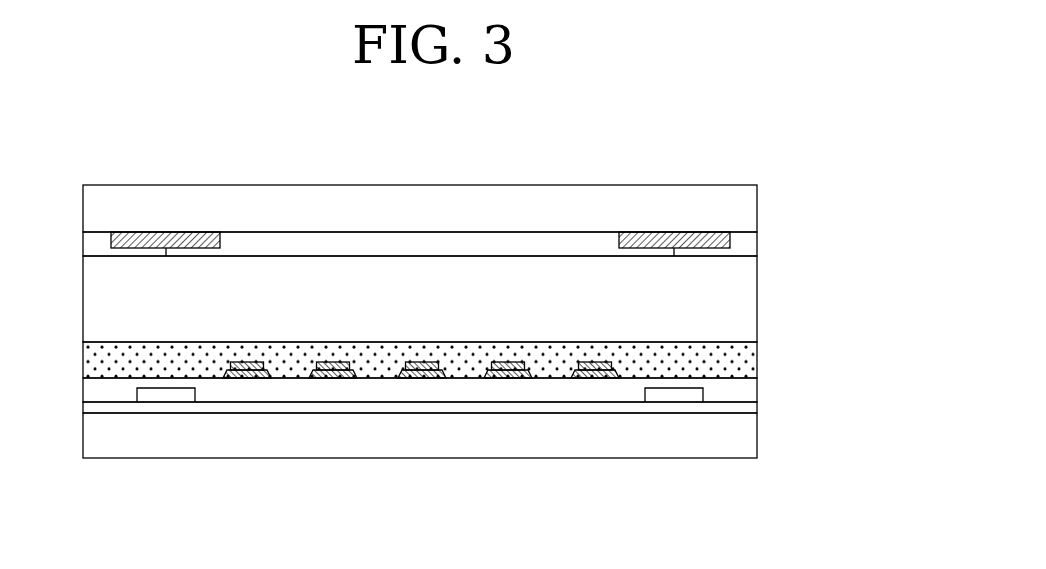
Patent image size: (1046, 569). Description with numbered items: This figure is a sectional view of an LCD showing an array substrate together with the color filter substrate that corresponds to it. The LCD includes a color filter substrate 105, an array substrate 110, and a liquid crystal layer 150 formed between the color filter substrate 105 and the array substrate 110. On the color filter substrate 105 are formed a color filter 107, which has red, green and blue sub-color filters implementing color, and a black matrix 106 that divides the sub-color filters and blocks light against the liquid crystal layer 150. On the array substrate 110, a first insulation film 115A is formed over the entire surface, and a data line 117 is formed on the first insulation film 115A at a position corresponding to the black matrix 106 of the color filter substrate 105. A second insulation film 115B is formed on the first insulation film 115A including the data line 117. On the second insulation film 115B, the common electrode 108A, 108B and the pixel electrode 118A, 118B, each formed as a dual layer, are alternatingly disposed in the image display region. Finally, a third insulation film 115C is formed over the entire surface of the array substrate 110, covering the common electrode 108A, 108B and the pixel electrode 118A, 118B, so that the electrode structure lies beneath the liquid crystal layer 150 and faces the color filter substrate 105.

The color filter substrate 105 is at (748, 206).
The black matrix 106 is at (641, 232).
The color filter 107 is at (472, 243).
The liquid crystal layer 150 is at (750, 302).
The third insulation film 115C is at (748, 355).
The second insulation film 115B is at (748, 391).
The first insulation film 115A is at (748, 409).
The array substrate 110 is at (748, 436).
The data line 117 is at (168, 395).
The common electrode 108A is at (242, 377).
The common electrode 108B is at (255, 377).
The pixel electrode 118A is at (327, 377).
The pixel electrode 118B is at (338, 377).